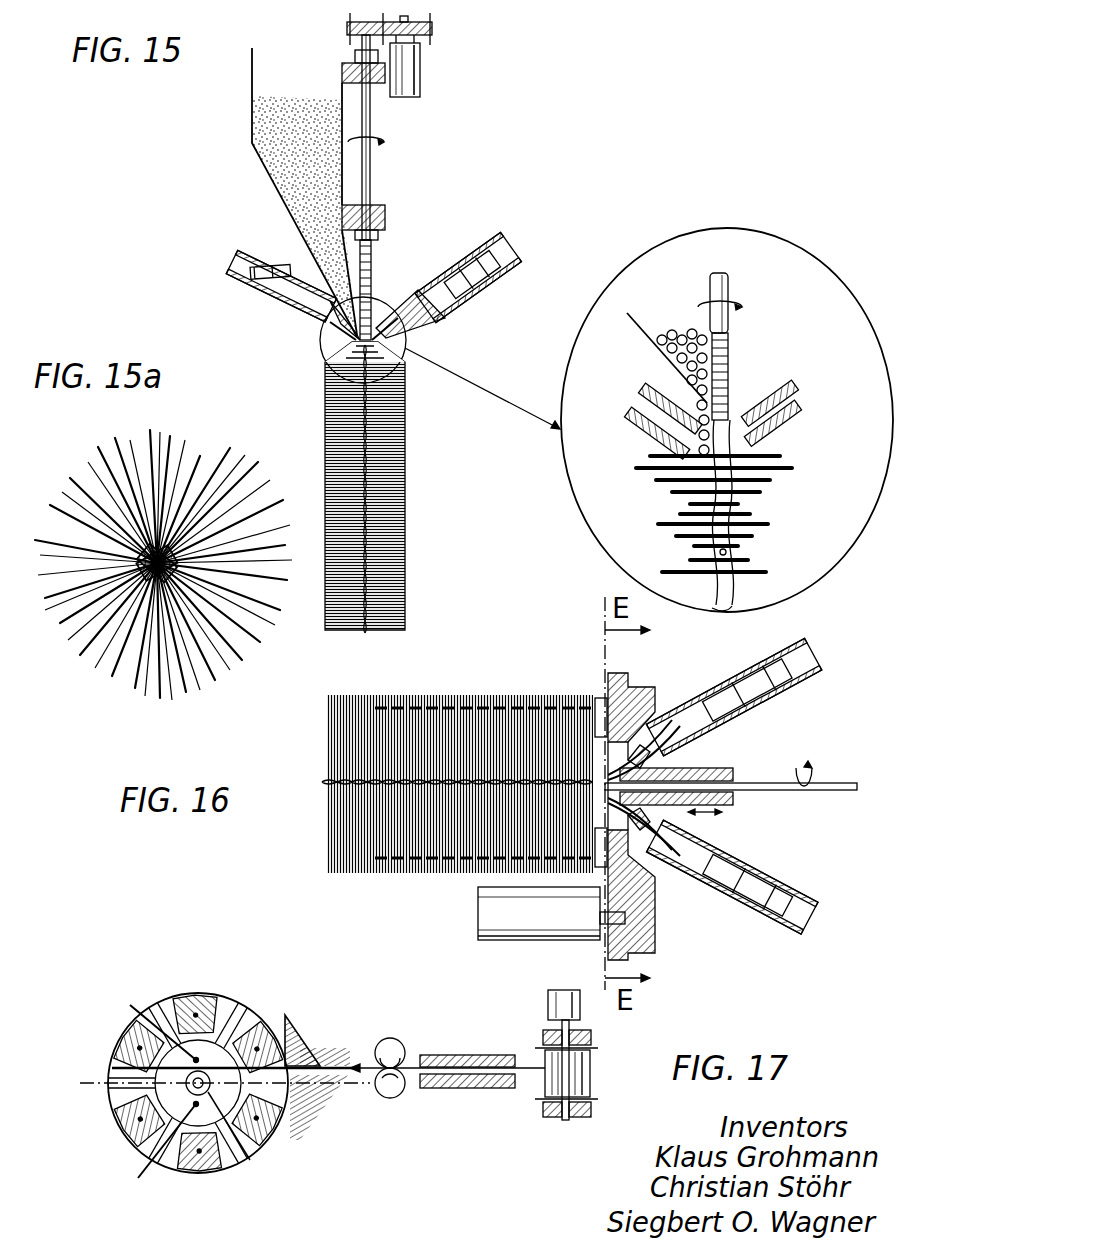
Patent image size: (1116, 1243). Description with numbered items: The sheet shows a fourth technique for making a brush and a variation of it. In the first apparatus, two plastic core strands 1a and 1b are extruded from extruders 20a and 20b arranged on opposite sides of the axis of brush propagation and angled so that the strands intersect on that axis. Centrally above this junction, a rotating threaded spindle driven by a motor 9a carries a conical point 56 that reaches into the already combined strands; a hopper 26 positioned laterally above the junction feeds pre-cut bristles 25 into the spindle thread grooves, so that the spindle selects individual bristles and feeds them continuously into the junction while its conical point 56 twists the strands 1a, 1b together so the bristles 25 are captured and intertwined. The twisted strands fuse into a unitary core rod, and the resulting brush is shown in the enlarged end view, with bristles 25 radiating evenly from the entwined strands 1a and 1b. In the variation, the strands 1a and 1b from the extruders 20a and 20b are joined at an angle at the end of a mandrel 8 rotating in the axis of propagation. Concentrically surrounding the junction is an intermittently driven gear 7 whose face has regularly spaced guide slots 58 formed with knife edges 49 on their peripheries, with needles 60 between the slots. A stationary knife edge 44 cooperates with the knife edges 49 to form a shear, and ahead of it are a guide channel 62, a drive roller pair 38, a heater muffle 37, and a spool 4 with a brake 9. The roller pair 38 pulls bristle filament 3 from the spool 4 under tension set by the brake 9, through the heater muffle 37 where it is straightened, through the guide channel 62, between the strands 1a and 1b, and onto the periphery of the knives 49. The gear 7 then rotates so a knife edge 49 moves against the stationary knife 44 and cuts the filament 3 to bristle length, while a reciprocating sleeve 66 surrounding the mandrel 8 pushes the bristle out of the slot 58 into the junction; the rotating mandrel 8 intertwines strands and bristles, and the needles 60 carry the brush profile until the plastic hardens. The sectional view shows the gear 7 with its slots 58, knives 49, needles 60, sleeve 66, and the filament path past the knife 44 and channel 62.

In FIG. 15A, the plastic core strand 1a is at (125, 550).
In FIG. 16, the plastic core strand 1a is at (660, 725).
In FIG. 17, the plastic core strand 1a is at (153, 1018).
In FIG. 15A, the plastic core strand 1b is at (160, 585).
In FIG. 16, the plastic core strand 1b is at (610, 808).
In FIG. 17, the plastic core strand 1b is at (155, 1152).
In FIG. 17, the bristle filament 3 is at (368, 1072).
In FIG. 17, the spool 4 is at (590, 1092).
In FIG. 16, the gear 7 is at (645, 690).
In FIG. 17, the gear 7 is at (112, 1106).
In FIG. 16, the mandrel 8 is at (840, 782).
In FIG. 17, the mandrel 8 is at (205, 1080).
In FIG. 16, the brake 9 is at (548, 927).
In FIG. 17, the brake 9 is at (548, 1004).
In FIG. 15, the motor 9a is at (422, 60).
In FIG. 16, the extruder 20a is at (822, 672).
In FIG. 16, the extruder 20b is at (762, 925).
In FIG. 15A, the pre-cut bristles 25 is at (190, 470).
In FIG. 15, the hopper 26 is at (250, 160).
In FIG. 17, the heater muffle 37 is at (478, 1090).
In FIG. 17, the drive roller pair 38 is at (392, 1045).
In FIG. 17, the stationary knife edge 44 is at (300, 1048).
In FIG. 16, the knife edge 49 is at (600, 700).
In FIG. 17, the knife edge 49 is at (115, 1062).
In FIG. 15, the conical point 56 is at (745, 462).
In FIG. 17, the guide slot 58 is at (205, 1075).
In FIG. 16, the needles 60 is at (500, 700).
In FIG. 17, the needles 60 is at (196, 1000).
In FIG. 17, the guide channel 62 is at (330, 1055).
In FIG. 16, the reciprocating sleeve 66 is at (722, 768).
In FIG. 17, the reciprocating sleeve 66 is at (248, 1138).